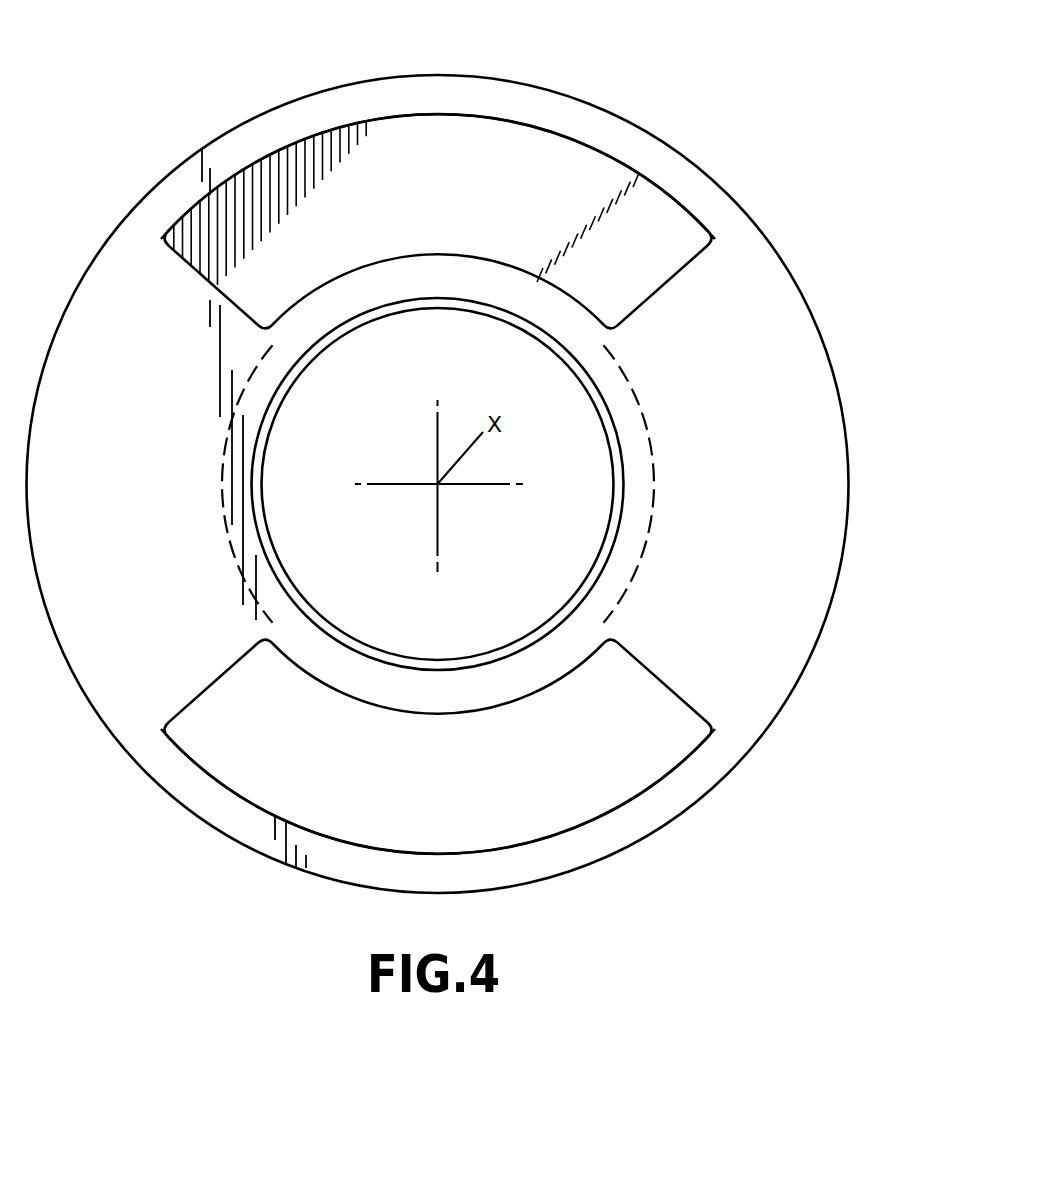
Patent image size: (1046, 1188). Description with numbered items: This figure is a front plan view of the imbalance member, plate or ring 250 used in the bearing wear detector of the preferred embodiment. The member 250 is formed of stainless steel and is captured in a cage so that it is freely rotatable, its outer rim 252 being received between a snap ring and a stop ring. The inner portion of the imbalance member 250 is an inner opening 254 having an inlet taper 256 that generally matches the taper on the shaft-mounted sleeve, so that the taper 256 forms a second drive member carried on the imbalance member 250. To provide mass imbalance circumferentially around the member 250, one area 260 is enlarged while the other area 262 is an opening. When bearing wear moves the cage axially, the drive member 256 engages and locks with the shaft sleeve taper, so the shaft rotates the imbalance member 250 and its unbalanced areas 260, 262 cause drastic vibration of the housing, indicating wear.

The imbalance member 250 is at (540, 132).
The outer rim 252 is at (625, 120).
The inner opening 254 is at (272, 415).
The inlet taper 256 is at (345, 318).
The enlarged area 260 is at (682, 235).
The opening 262 is at (603, 788).